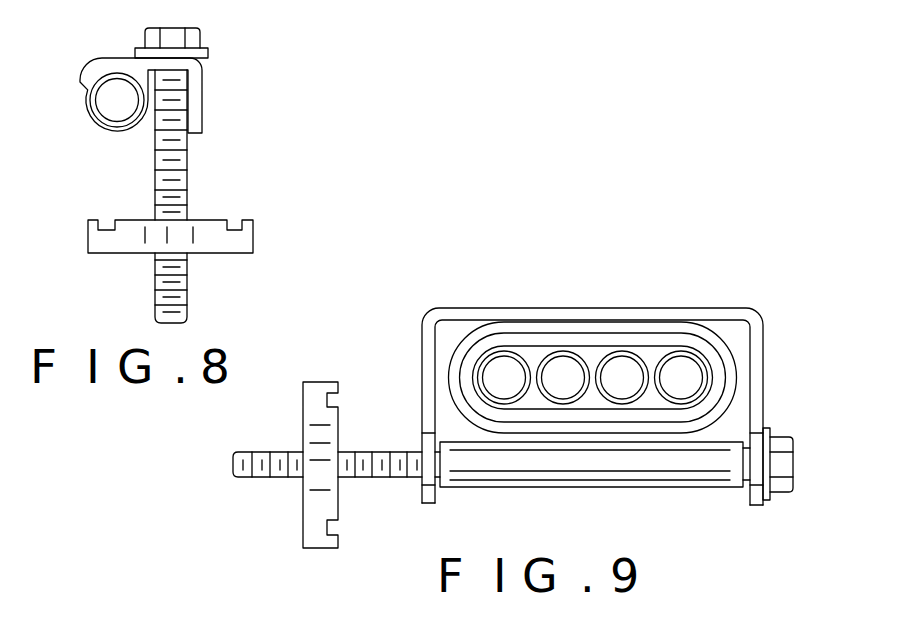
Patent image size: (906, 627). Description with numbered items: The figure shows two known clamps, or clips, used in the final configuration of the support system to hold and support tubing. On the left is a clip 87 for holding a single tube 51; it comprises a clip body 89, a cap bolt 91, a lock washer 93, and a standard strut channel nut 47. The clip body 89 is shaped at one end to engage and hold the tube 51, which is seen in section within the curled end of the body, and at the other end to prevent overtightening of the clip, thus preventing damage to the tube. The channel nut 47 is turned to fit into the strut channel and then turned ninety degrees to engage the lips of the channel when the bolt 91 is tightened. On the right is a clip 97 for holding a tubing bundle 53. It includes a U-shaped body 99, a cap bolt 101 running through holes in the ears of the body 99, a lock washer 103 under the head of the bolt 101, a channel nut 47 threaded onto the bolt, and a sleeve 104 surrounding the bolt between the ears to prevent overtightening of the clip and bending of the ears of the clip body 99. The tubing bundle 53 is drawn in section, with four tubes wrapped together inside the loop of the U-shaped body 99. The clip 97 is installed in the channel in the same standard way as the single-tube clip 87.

In FIG. 8, the channel nut 47 is at (210, 230).
In FIG. 9, the channel nut 47 is at (318, 500).
In FIG. 8, the tube 51 is at (117, 125).
In FIG. 9, the tubing bundle 53 is at (465, 338).
In FIG. 8, the clip 87 is at (230, 140).
In FIG. 8, the clip body 89 is at (92, 65).
In FIG. 8, the cap bolt 91 is at (187, 158).
In FIG. 8, the lock washer 93 is at (202, 60).
In FIG. 9, the clip 97 is at (481, 286).
In FIG. 9, the U-shaped body 99 is at (627, 308).
In FIG. 9, the cap bolt 101 is at (383, 465).
In FIG. 9, the lock washer 103 is at (768, 425).
In FIG. 9, the sleeve 104 is at (655, 483).